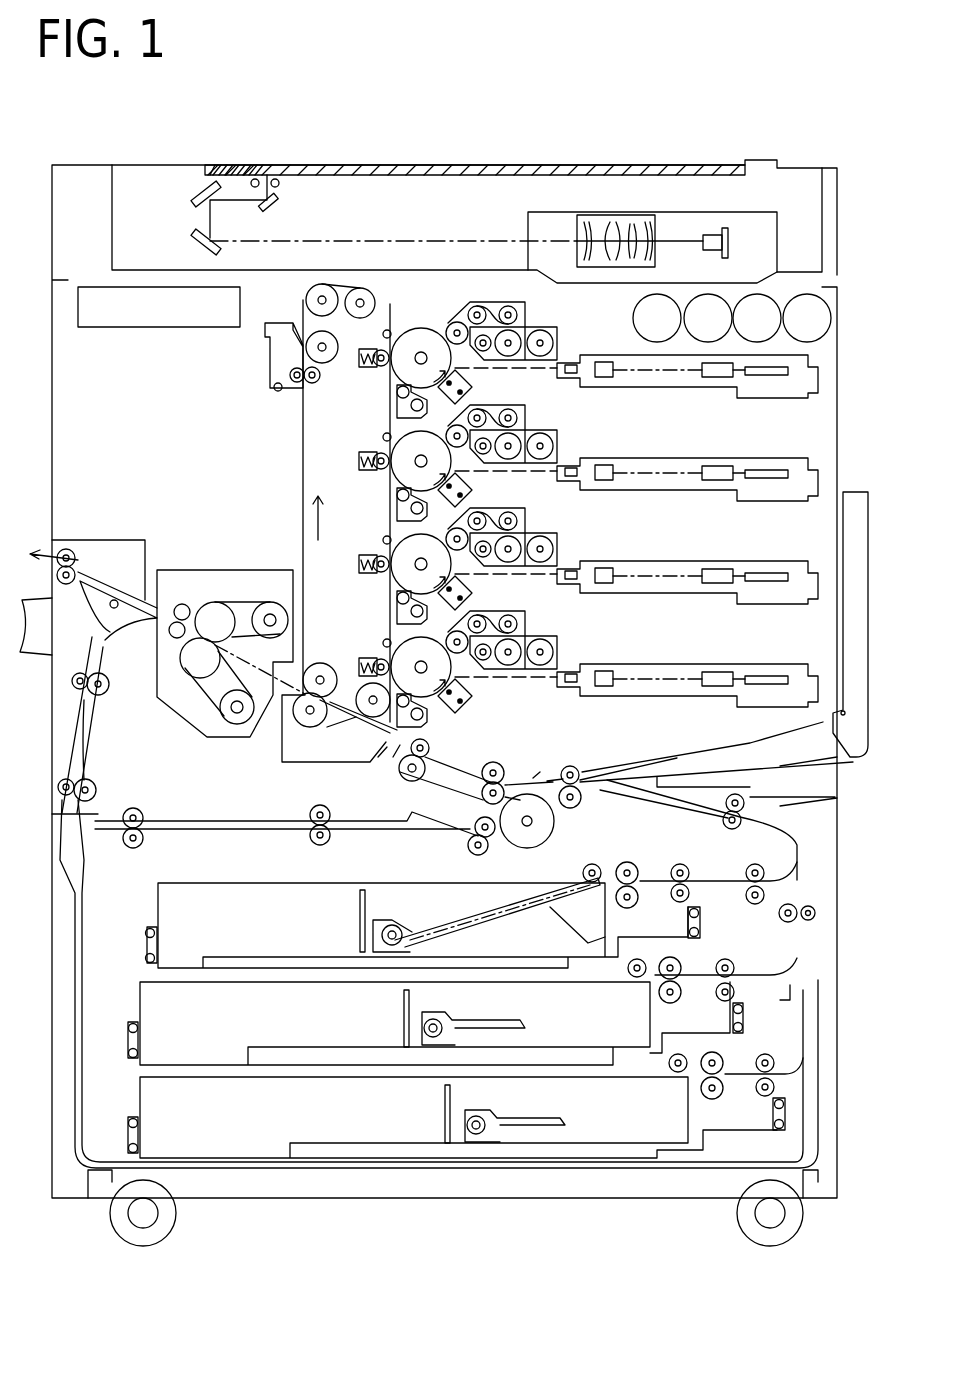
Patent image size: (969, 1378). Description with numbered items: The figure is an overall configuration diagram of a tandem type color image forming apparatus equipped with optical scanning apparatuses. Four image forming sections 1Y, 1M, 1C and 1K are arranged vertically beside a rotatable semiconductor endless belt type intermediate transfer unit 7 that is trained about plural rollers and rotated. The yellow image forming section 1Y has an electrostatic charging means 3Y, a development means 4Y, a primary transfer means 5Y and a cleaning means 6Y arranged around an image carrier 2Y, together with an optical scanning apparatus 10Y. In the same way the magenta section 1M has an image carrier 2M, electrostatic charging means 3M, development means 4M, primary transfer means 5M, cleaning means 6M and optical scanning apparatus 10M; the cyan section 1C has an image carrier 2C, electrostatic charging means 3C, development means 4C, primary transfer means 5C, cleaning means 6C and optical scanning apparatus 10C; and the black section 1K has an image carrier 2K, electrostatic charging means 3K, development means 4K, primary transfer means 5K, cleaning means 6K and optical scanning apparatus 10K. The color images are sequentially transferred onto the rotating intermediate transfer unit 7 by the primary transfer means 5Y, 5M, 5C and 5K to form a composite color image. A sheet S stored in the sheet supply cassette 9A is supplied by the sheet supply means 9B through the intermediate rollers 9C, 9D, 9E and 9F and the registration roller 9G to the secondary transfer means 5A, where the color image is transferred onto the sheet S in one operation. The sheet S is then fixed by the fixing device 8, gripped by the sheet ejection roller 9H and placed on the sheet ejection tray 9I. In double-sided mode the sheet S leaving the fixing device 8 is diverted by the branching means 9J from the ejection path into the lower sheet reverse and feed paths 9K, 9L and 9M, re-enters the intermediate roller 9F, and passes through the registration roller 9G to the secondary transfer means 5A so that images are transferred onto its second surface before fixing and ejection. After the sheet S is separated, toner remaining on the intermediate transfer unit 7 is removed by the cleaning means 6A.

The image forming section 1Y is at (570, 368).
The image forming section 1M is at (570, 456).
The image forming section 1C is at (569, 550).
The image forming section 1K is at (568, 654).
The image carrier 2Y is at (410, 335).
The image carrier 2M is at (395, 452).
The image carrier 2C is at (395, 557).
The image carrier 2K is at (398, 652).
The electrostatic charging means 3Y is at (468, 380).
The electrostatic charging means 3M is at (468, 483).
The electrostatic charging means 3C is at (468, 586).
The electrostatic charging means 3K is at (476, 690).
The development means 4Y is at (470, 308).
The development means 4M is at (548, 400).
The development means 4C is at (548, 505).
The development means 4K is at (548, 605).
The primary transfer means 5Y is at (378, 366).
The primary transfer means 5M is at (378, 474).
The primary transfer means 5C is at (378, 578).
The primary transfer means 5K is at (378, 660).
The secondary transfer means 5A is at (341, 729).
The cleaning means 6Y is at (397, 412).
The cleaning means 6M is at (397, 520).
The cleaning means 6C is at (397, 608).
The cleaning means 6K is at (430, 720).
The cleaning means 6A is at (270, 364).
The intermediate transfer unit 7 is at (300, 450).
The fixing device 8 is at (216, 549).
The sheet supply cassette 9A is at (243, 883).
The sheet supply means 9B is at (627, 862).
The intermediate roller 9C is at (748, 862).
The intermediate roller 9D is at (722, 815).
The intermediate roller 9E is at (578, 797).
The intermediate roller 9F is at (500, 766).
The registration roller 9G is at (400, 778).
The sheet ejection roller 9H is at (78, 560).
The sheet ejection tray 9I is at (42, 614).
The branching means 9J is at (117, 622).
The sheet reverse and feed path 9K is at (93, 737).
The sheet reverse and feed path 9L is at (84, 1014).
The sheet reverse and feed path 9M is at (376, 832).
The optical scanning apparatus 10Y is at (683, 396).
The optical scanning apparatus 10M is at (677, 494).
The optical scanning apparatus 10C is at (764, 561).
The optical scanning apparatus 10K is at (697, 663).
The sheet S is at (497, 903).